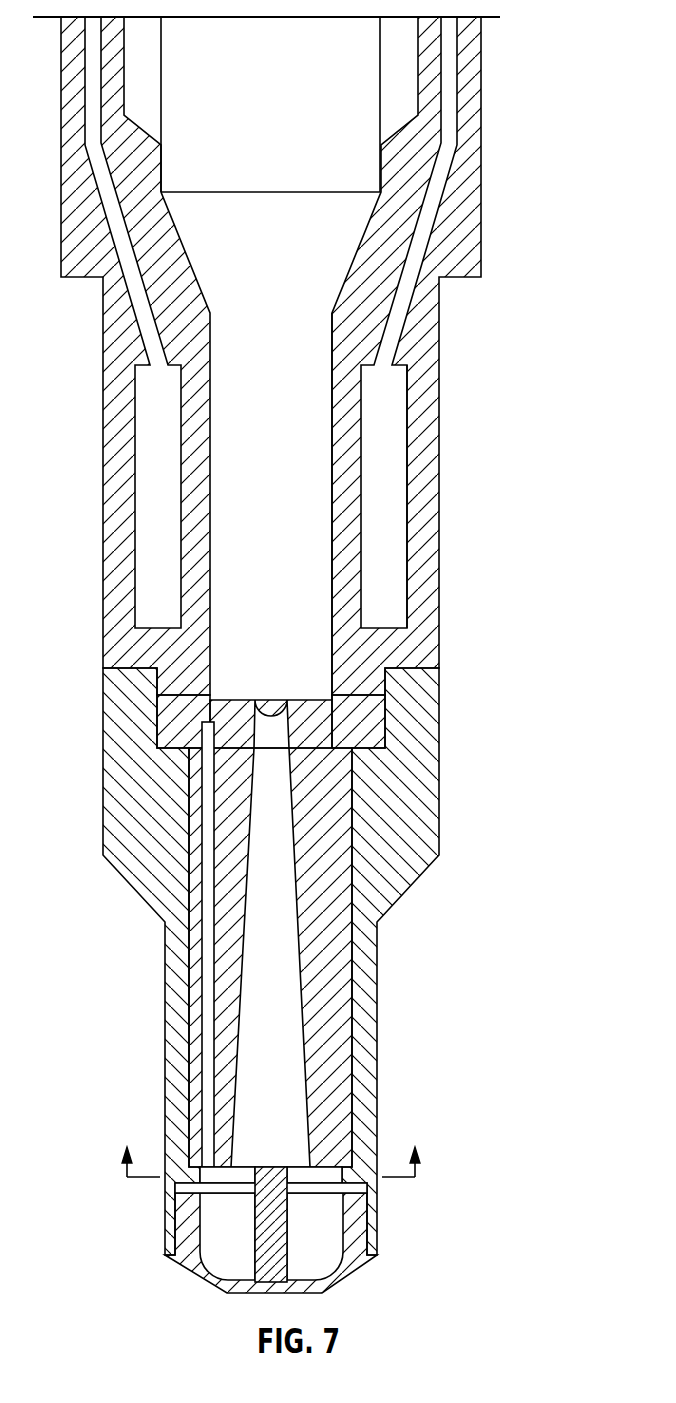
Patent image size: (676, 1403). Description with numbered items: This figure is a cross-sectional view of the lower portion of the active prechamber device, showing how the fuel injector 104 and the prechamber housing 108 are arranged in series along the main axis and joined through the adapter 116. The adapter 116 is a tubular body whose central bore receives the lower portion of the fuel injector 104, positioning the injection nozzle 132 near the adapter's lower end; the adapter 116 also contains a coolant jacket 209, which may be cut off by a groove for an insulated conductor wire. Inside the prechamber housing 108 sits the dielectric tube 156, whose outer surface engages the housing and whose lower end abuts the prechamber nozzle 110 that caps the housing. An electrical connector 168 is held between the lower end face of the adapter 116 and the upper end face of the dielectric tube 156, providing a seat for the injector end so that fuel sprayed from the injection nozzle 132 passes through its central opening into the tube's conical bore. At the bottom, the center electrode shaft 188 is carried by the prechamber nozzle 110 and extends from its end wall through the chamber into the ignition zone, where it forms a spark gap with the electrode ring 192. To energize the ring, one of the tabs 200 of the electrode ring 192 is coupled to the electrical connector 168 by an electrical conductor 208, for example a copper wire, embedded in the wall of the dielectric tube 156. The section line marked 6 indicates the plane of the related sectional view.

The fuel injector 104 is at (380, 72).
The adapter 116 is at (440, 392).
The coolant jacket 209 is at (410, 568).
The electrical connector 168 is at (160, 716).
The injection nozzle 132 is at (278, 718).
The prechamber housing 108 is at (440, 818).
The electrical conductor 208 is at (207, 970).
The dielectric tube 156 is at (343, 977).
The tabs 200 is at (210, 1173).
The center electrode shaft 188 is at (287, 1217).
The prechamber nozzle 110 is at (352, 1262).
The electrode ring 192 is at (240, 1185).
The section line 6 is at (271, 1149).